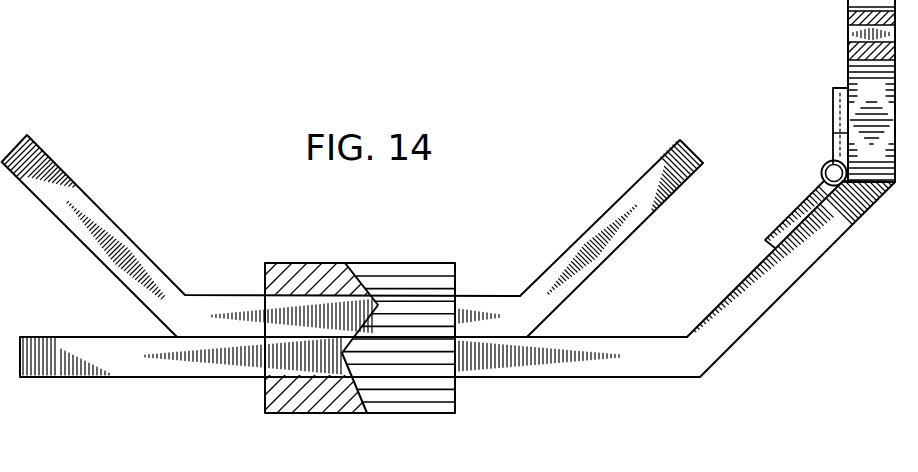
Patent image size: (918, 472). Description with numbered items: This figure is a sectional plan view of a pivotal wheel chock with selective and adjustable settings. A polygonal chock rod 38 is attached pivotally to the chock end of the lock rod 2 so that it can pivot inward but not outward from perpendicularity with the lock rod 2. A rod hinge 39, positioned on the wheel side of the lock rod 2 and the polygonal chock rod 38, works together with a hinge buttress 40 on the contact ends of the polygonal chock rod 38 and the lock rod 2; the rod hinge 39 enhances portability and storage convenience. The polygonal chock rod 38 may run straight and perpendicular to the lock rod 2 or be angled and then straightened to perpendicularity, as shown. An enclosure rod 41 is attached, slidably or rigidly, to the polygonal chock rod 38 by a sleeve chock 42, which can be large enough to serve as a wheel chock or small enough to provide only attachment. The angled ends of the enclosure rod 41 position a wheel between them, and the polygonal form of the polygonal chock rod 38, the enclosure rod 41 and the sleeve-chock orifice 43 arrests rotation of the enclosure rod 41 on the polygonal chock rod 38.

The lock rod 2 is at (848, 42).
The polygonal chock rod 38 is at (658, 350).
The rod hinge 39 is at (827, 165).
The hinge buttress 40 is at (880, 193).
The enclosure rod 41 is at (213, 308).
The sleeve chock 42 is at (417, 262).
The sleeve-chock orifice 43 is at (308, 292).